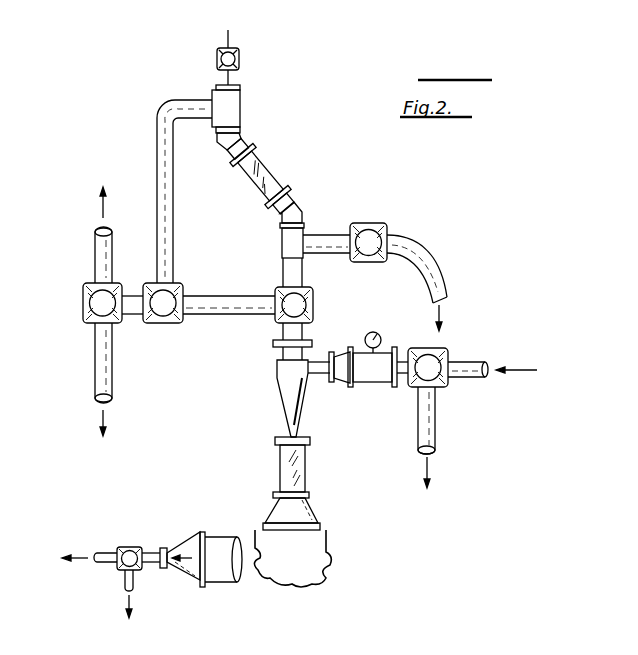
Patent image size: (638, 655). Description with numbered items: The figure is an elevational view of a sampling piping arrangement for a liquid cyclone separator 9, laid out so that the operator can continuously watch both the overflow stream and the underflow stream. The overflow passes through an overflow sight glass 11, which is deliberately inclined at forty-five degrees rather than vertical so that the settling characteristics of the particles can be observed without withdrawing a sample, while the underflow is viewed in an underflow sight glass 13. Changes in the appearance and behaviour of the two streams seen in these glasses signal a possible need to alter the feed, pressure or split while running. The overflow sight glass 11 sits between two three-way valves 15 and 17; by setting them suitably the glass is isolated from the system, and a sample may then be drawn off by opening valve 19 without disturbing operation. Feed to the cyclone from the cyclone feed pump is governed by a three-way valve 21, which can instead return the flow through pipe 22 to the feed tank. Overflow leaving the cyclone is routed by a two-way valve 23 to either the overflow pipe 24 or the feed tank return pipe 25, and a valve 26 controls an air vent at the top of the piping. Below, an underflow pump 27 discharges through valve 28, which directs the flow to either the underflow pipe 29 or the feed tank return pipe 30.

The liquid cyclone separator 9 is at (285, 400).
The overflow sight glass 11 is at (268, 170).
The underflow sight glass 13 is at (279, 470).
The three-way valve 15 is at (314, 305).
The three-way valve 17 is at (181, 290).
The valve 19 is at (380, 226).
The three-way valve 21 is at (448, 355).
The pipe 22 is at (435, 425).
The two-way valve 23 is at (83, 310).
The overflow pipe 24 is at (95, 253).
The feed tank return pipe 25 is at (95, 373).
The valve 26 is at (239, 60).
The underflow pump 27 is at (318, 570).
The valve 28 is at (130, 548).
The underflow pipe 29 is at (105, 553).
The feed tank return pipe 30 is at (125, 582).